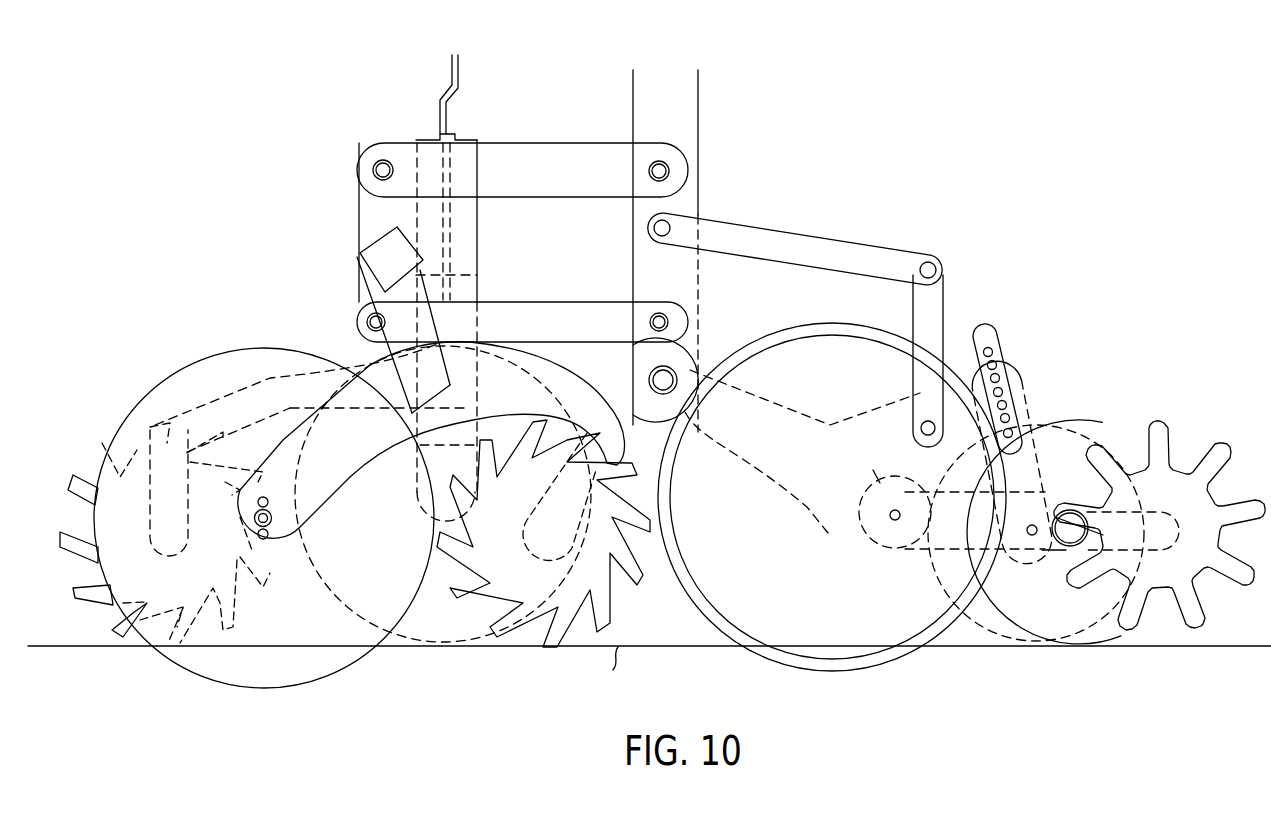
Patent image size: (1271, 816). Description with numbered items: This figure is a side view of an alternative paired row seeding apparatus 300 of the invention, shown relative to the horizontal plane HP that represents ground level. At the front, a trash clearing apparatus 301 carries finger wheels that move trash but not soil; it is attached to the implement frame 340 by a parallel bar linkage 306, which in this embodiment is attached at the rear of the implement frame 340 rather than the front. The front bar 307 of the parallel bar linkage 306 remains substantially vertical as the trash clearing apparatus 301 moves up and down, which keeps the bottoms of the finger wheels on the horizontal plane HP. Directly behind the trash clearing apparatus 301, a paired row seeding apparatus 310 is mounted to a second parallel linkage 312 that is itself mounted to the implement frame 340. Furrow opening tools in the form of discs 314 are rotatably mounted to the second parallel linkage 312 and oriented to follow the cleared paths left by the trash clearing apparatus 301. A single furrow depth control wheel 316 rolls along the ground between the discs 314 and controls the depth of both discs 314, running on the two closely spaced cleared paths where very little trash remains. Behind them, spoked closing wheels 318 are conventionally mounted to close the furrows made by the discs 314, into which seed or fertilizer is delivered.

The paired row seeding apparatus 300 is at (649, 410).
The trash clearing apparatus 301 is at (342, 556).
The parallel bar linkage 306 is at (512, 141).
The front bar 307 is at (358, 225).
The paired row seeding apparatus 310 is at (851, 551).
The second parallel linkage 312 is at (855, 243).
The discs 314 is at (707, 640).
The furrow depth control wheel 316 is at (1045, 412).
The spoked closing wheels 318 is at (1182, 430).
The implement frame 340 is at (697, 107).